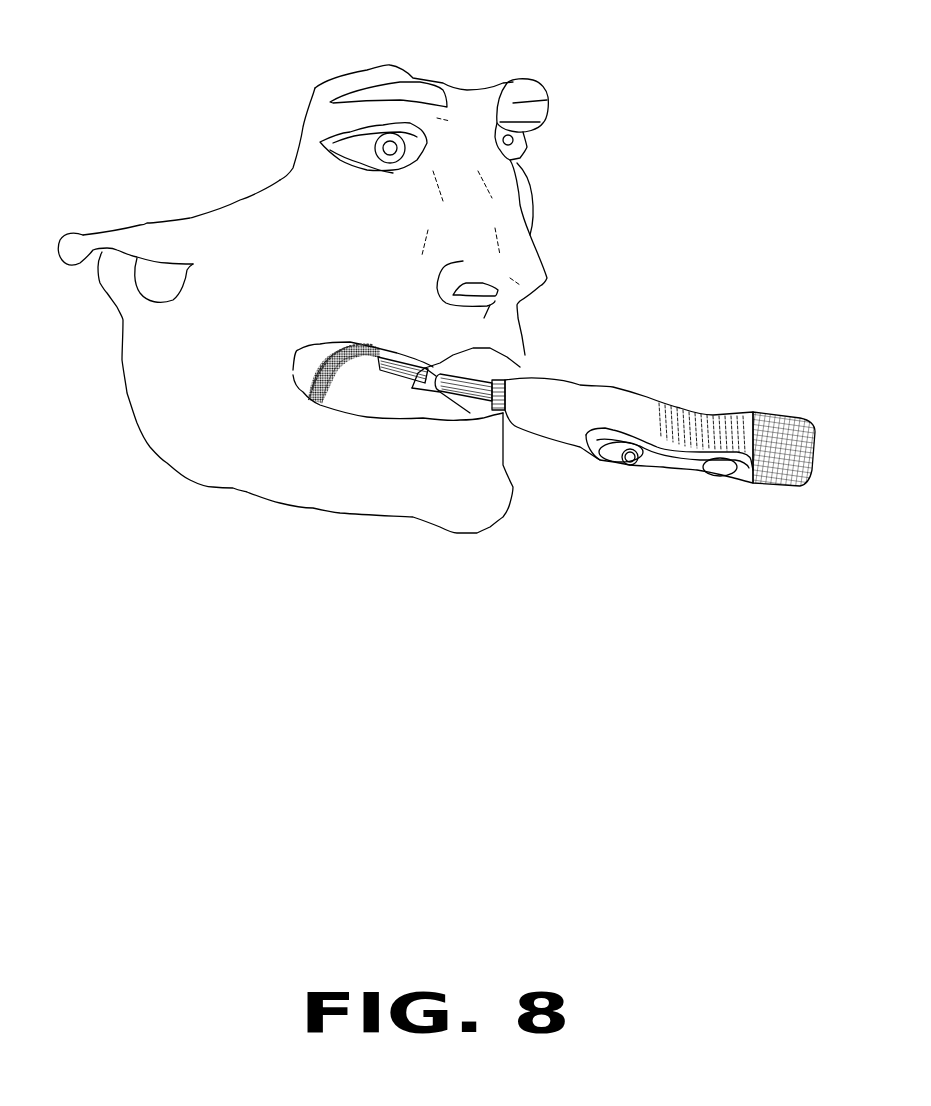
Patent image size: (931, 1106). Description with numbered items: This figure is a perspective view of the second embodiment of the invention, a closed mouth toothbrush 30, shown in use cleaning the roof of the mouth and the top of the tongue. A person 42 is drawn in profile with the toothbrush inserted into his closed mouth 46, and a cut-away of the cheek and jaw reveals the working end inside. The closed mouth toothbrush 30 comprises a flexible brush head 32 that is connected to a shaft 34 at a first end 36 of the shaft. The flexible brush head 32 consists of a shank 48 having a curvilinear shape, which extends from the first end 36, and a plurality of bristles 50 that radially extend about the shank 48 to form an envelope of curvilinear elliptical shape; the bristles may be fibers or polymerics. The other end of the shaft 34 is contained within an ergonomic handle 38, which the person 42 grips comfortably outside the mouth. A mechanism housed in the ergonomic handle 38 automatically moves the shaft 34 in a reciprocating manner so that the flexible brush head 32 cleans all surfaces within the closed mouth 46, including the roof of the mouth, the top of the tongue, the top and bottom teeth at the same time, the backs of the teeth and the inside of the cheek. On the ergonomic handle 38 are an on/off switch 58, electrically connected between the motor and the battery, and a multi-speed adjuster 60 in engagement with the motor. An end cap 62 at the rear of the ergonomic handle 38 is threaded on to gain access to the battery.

The closed mouth toothbrush 30 is at (529, 319).
The flexible brush head 32 is at (338, 333).
The shaft 34 is at (480, 373).
The first end 36 is at (397, 363).
The ergonomic handle 38 is at (658, 444).
The person 42 is at (473, 84).
The closed mouth 46 is at (513, 364).
The shank 48 is at (340, 367).
The plurality of bristles 50 is at (316, 370).
The on/off switch 58 is at (720, 476).
The multi-speed adjuster 60 is at (628, 464).
The end cap 62 is at (787, 423).